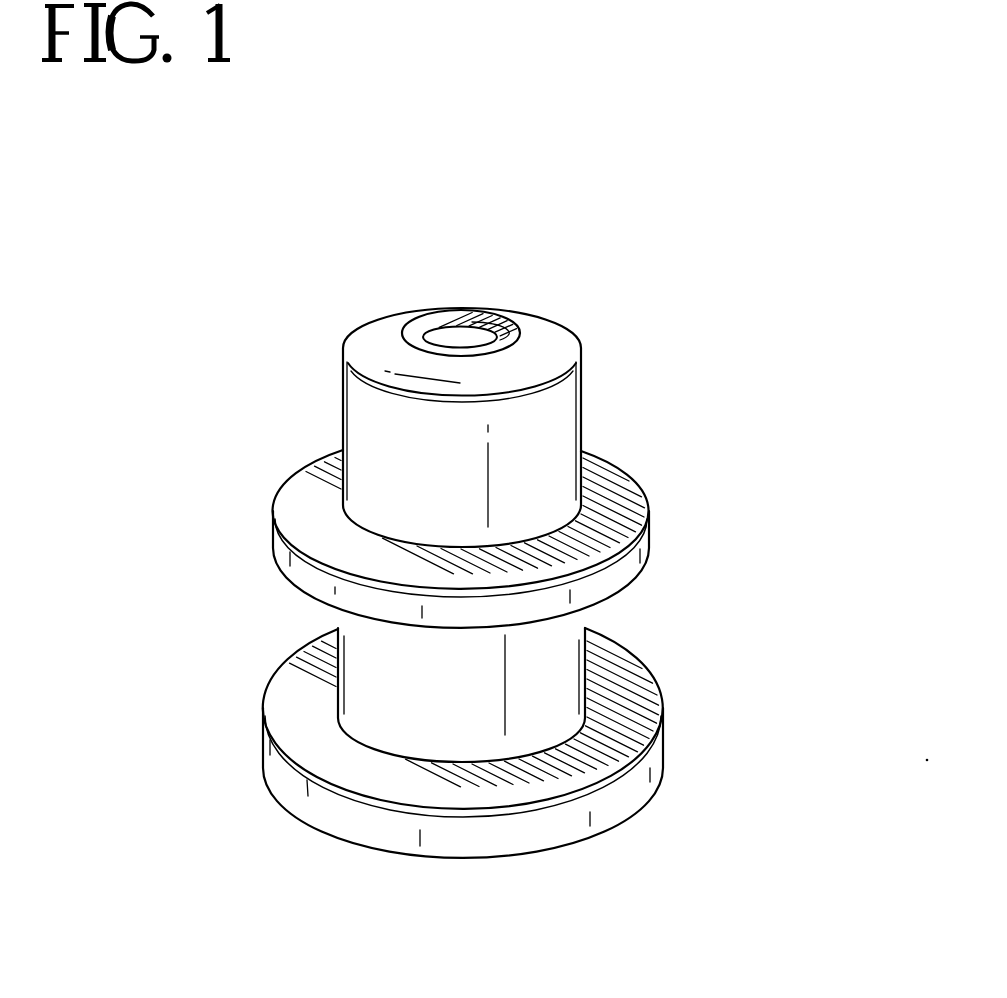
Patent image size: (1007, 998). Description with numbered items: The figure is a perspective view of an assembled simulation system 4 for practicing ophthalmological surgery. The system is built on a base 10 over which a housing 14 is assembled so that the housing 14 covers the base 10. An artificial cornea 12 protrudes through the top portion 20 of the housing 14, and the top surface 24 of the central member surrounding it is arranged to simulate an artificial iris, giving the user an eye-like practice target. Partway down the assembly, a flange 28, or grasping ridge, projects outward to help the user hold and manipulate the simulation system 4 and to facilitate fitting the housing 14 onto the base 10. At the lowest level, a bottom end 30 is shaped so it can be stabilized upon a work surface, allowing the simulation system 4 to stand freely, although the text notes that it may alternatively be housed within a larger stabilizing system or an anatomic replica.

The simulation system 4 is at (763, 160).
The base 10 is at (283, 675).
The artificial cornea 12 is at (428, 312).
The housing 14 is at (340, 387).
The top portion 20 is at (550, 347).
The top surface 24 is at (522, 330).
The flange 28 is at (628, 488).
The bottom end 30 is at (640, 733).